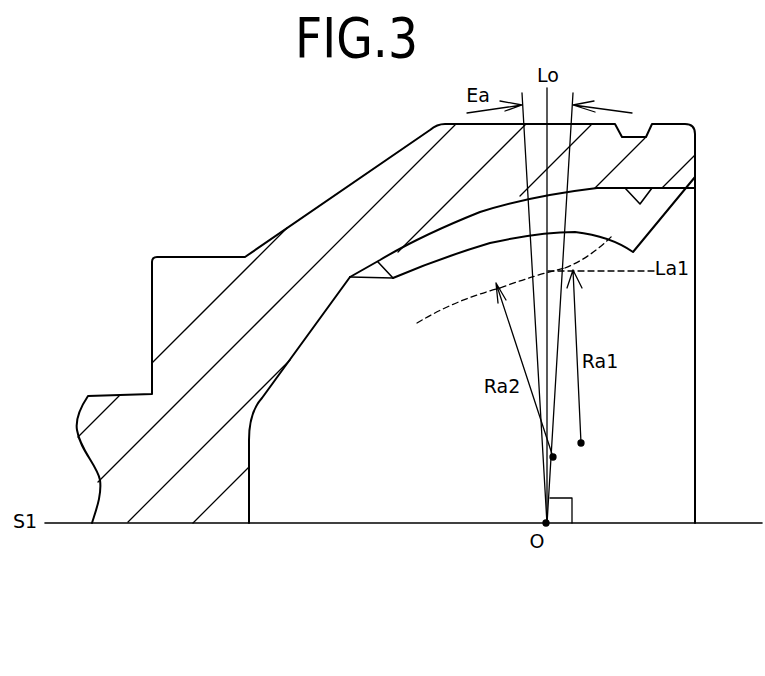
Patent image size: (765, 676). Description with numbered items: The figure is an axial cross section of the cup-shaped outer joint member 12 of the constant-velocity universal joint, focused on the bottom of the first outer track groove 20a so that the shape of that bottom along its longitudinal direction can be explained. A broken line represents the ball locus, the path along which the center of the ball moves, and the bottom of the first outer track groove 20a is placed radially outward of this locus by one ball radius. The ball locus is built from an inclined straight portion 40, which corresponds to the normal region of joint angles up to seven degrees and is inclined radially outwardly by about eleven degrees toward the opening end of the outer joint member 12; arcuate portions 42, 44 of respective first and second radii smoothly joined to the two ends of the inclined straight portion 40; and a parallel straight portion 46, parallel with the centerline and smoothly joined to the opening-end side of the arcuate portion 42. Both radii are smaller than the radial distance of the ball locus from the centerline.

The cup-shaped outer joint member 12 is at (322, 222).
The first outer track groove 20a is at (651, 190).
The inclined straight portion 40 is at (538, 272).
The arcuate portion 42 is at (612, 236).
The arcuate portion 44 is at (458, 303).
The parallel straight portion 46 is at (629, 273).